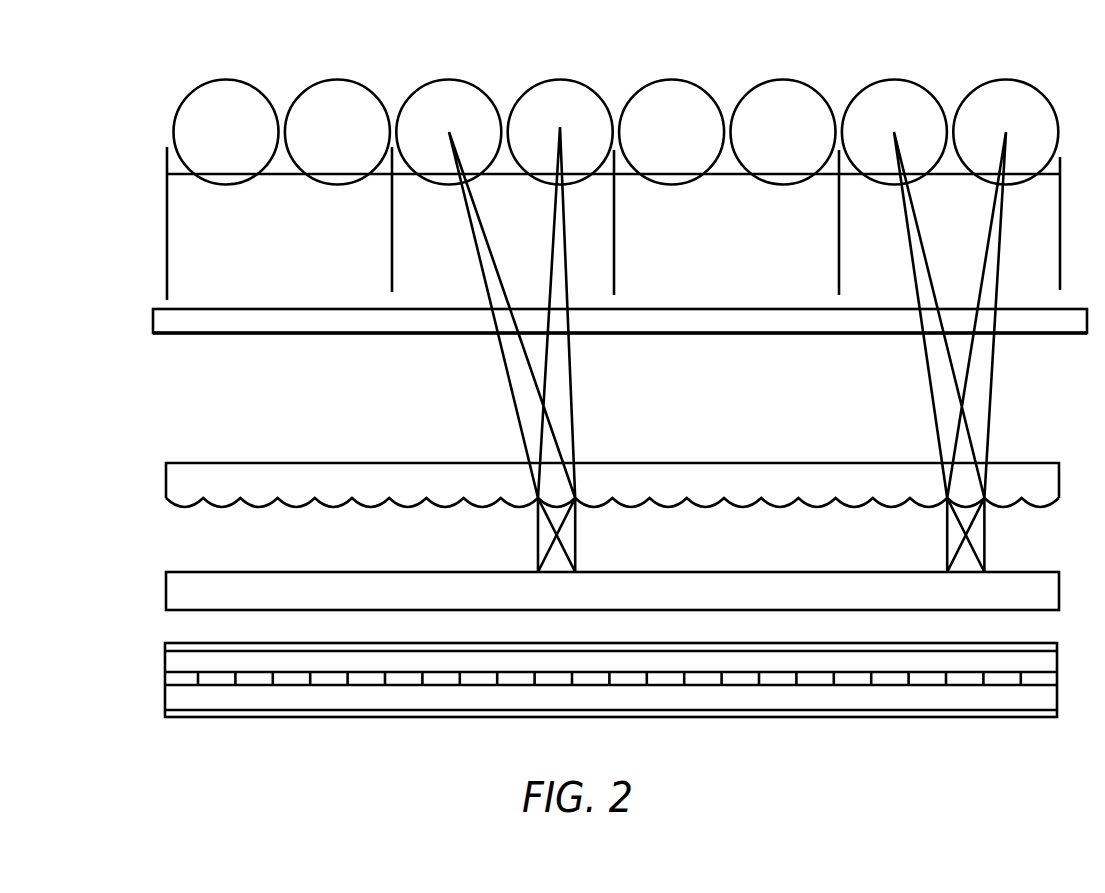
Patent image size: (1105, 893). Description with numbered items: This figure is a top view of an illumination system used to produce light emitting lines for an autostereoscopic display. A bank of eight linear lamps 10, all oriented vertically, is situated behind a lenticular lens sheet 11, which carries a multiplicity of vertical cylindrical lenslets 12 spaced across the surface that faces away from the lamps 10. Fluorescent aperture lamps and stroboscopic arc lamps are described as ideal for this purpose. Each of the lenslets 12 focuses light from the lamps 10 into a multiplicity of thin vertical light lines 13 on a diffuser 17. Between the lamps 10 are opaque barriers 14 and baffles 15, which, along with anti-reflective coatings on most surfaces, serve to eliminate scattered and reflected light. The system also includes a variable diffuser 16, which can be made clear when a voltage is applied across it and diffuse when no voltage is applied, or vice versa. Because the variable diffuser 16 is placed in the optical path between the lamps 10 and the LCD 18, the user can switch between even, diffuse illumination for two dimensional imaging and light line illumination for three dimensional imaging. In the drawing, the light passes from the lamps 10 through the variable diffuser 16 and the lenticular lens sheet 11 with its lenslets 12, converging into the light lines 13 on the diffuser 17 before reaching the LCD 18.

The linear lamps 10 is at (213, 80).
The lenticular lens sheet 11 is at (166, 484).
The vertical cylindrical lenslets 12 is at (260, 507).
The thin vertical light lines 13 is at (538, 572).
The opaque barriers 14 is at (281, 176).
The baffles 15 is at (614, 229).
The variable diffuser 16 is at (620, 349).
The diffuser 17 is at (177, 571).
The LCD 18 is at (165, 660).